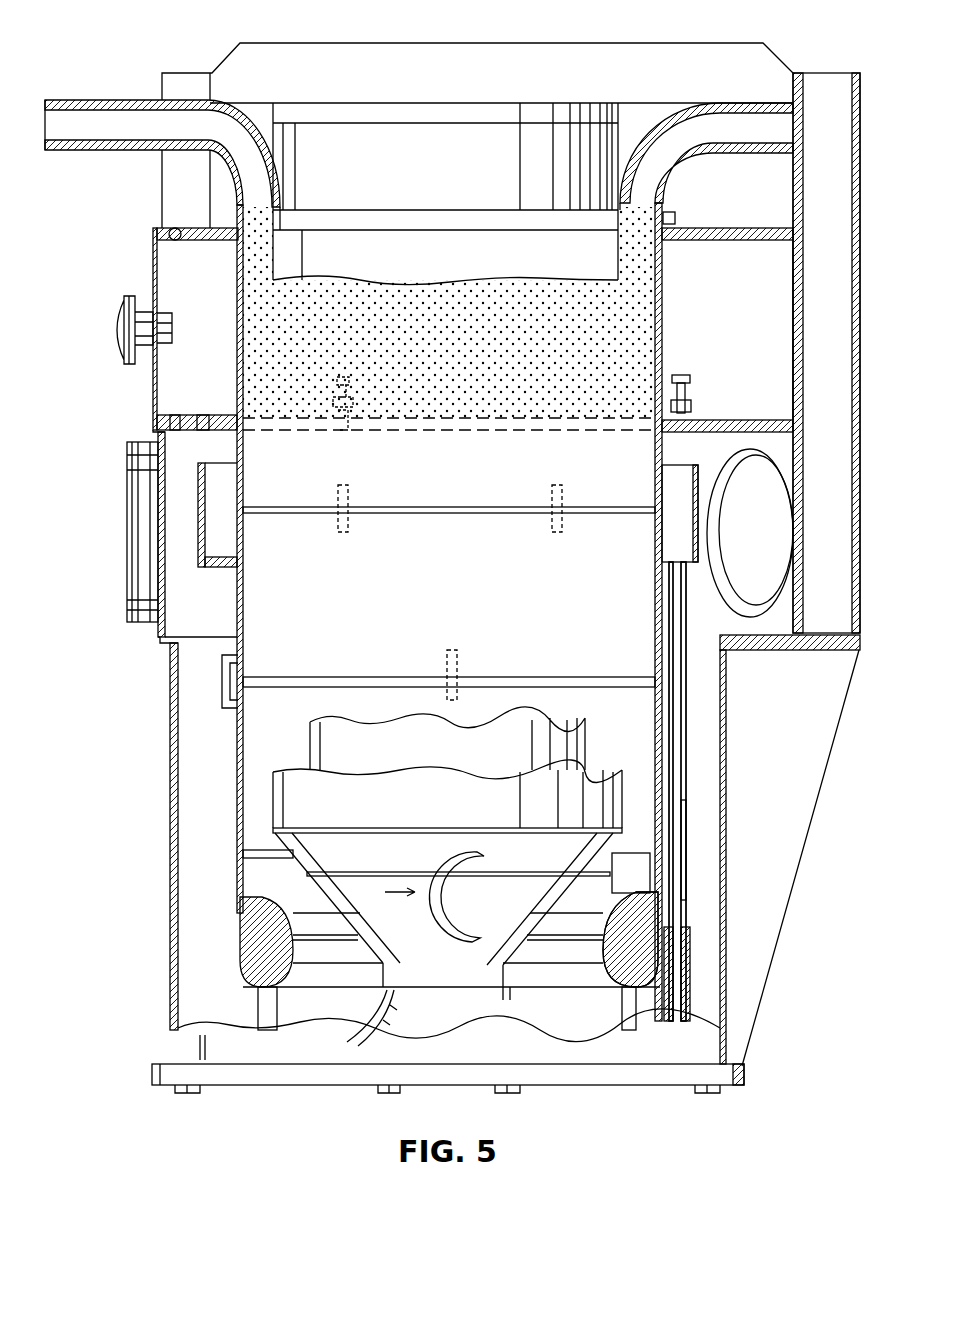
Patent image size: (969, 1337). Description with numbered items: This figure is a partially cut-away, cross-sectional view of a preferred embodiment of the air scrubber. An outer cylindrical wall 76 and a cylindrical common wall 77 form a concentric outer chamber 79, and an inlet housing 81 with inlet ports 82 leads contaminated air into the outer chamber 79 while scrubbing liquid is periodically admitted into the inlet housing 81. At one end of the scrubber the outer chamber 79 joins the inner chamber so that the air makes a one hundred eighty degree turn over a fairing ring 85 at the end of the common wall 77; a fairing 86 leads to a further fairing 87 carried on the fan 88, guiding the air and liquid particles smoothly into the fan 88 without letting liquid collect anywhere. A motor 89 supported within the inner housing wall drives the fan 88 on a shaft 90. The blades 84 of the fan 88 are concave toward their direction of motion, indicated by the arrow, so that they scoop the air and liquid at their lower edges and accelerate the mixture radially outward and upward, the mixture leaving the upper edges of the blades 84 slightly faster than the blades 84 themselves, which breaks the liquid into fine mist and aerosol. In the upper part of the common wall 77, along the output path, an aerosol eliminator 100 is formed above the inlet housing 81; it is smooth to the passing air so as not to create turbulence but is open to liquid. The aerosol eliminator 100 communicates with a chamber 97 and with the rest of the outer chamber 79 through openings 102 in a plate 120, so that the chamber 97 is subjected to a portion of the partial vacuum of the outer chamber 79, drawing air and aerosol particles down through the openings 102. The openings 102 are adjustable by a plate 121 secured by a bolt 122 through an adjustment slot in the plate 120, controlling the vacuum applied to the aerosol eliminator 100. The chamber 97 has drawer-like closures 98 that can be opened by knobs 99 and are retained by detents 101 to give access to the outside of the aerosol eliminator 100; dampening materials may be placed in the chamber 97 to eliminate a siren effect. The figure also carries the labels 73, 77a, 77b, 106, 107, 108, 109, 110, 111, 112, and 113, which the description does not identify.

The feed hopper assembly 73 is at (551, 22).
The outer cylindrical wall 76 is at (728, 722).
The cylindrical common wall 77 is at (672, 764).
The guide rod 77a is at (672, 700).
The guide rod 77b is at (662, 620).
The outer chamber 79 is at (712, 795).
The inlet housing 81 is at (858, 430).
The inlet ports 82 is at (133, 550).
The blades 84 is at (450, 915).
The fairing ring 85 is at (652, 960).
The fairing 86 is at (385, 1020).
The fairing 87 is at (505, 968).
The fan 88 is at (444, 910).
The motor 89 is at (432, 760).
The shaft 90 is at (422, 872).
The chamber 97 is at (160, 255).
The drawer-like closures 98 is at (153, 272).
The knobs 99 is at (118, 330).
The aerosol eliminator 100 is at (668, 310).
The detents 101 is at (173, 232).
The openings 102 is at (203, 418).
The top cover 106 is at (477, 73).
The lower plate 107 is at (585, 677).
The bracket 108 is at (222, 680).
The bolt head 109 is at (352, 383).
The bolt shaft 110 is at (690, 388).
The nut 111 is at (692, 408).
The intermediate plate 112 is at (490, 505).
The plate bolt 113 is at (350, 497).
The plate 120 is at (215, 568).
The plate 121 is at (685, 832).
The bolt 122 is at (690, 980).